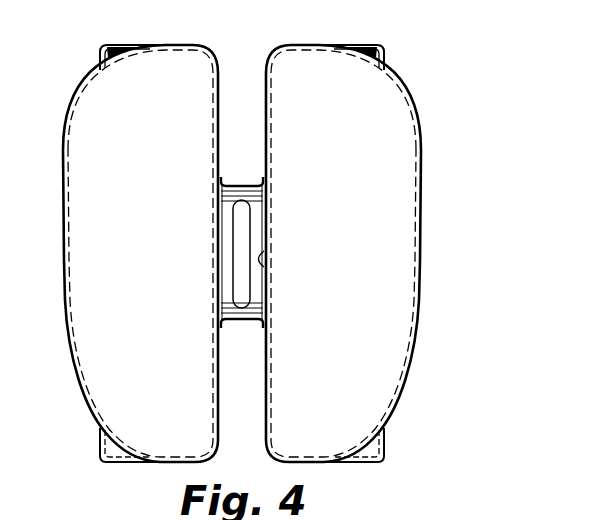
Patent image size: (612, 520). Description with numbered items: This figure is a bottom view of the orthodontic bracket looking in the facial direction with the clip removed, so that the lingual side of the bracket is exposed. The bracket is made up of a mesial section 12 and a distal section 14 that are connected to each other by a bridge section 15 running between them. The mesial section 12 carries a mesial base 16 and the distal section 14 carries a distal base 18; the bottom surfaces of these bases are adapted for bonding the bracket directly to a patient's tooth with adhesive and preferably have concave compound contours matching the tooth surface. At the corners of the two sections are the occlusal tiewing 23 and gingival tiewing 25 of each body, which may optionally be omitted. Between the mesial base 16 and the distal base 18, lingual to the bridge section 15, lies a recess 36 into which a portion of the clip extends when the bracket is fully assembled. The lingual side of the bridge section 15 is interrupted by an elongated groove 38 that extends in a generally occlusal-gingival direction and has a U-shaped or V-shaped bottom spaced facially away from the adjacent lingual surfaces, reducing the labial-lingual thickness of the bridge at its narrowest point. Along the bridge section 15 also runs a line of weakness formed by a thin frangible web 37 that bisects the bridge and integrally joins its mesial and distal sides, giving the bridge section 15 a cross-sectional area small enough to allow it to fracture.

The mesial section 12 is at (97, 55).
The distal section 14 is at (388, 53).
The bridge section 15 is at (230, 174).
The mesial base 16 is at (90, 217).
The distal base 18 is at (406, 212).
The occlusal tiewing 23 is at (128, 45).
The gingival tiewing 25 is at (132, 463).
The recess 36 is at (264, 264).
The frangible web 37 is at (243, 185).
The elongated groove 38 is at (247, 318).